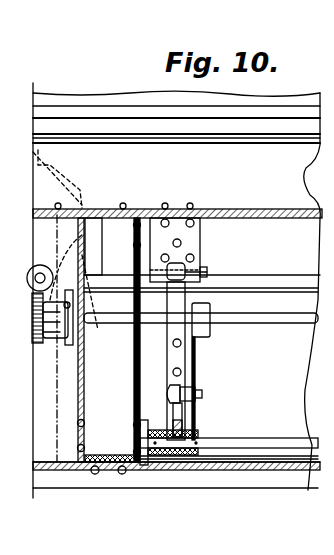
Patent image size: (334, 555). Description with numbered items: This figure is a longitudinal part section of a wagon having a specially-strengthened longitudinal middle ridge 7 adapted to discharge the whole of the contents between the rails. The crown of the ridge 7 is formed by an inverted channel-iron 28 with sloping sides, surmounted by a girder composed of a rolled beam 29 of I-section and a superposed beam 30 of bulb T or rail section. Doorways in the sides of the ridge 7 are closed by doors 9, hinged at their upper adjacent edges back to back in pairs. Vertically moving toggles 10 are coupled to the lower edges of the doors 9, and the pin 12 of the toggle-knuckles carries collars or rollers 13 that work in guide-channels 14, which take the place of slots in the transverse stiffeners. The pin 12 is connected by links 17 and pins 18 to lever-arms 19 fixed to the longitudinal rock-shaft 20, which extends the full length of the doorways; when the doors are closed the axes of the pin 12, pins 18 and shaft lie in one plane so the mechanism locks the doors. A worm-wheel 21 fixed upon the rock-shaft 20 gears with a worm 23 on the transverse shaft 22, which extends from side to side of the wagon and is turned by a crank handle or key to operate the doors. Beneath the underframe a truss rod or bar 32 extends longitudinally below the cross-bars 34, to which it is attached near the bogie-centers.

The longitudinal ridge 7 is at (263, 210).
The doors 9 is at (285, 389).
The toggles 10 is at (168, 430).
The pin 12 is at (290, 445).
The collars or rollers 13 is at (175, 481).
The slots 14 is at (143, 358).
The links 17 is at (185, 416).
The pins 18 is at (203, 395).
The lever-arms 19 is at (196, 358).
The longitudinal rock-shaft 20 is at (257, 318).
The worm-wheel 21 is at (54, 328).
The transverse shaft 22 is at (35, 278).
The worm 23 is at (47, 288).
The inverted channel-iron 28 is at (296, 212).
The rolled beam 29 is at (176, 161).
The superposed beam 30 is at (255, 128).
The truss rod or bar 32 is at (176, 479).
The cross-bars 34 is at (176, 340).